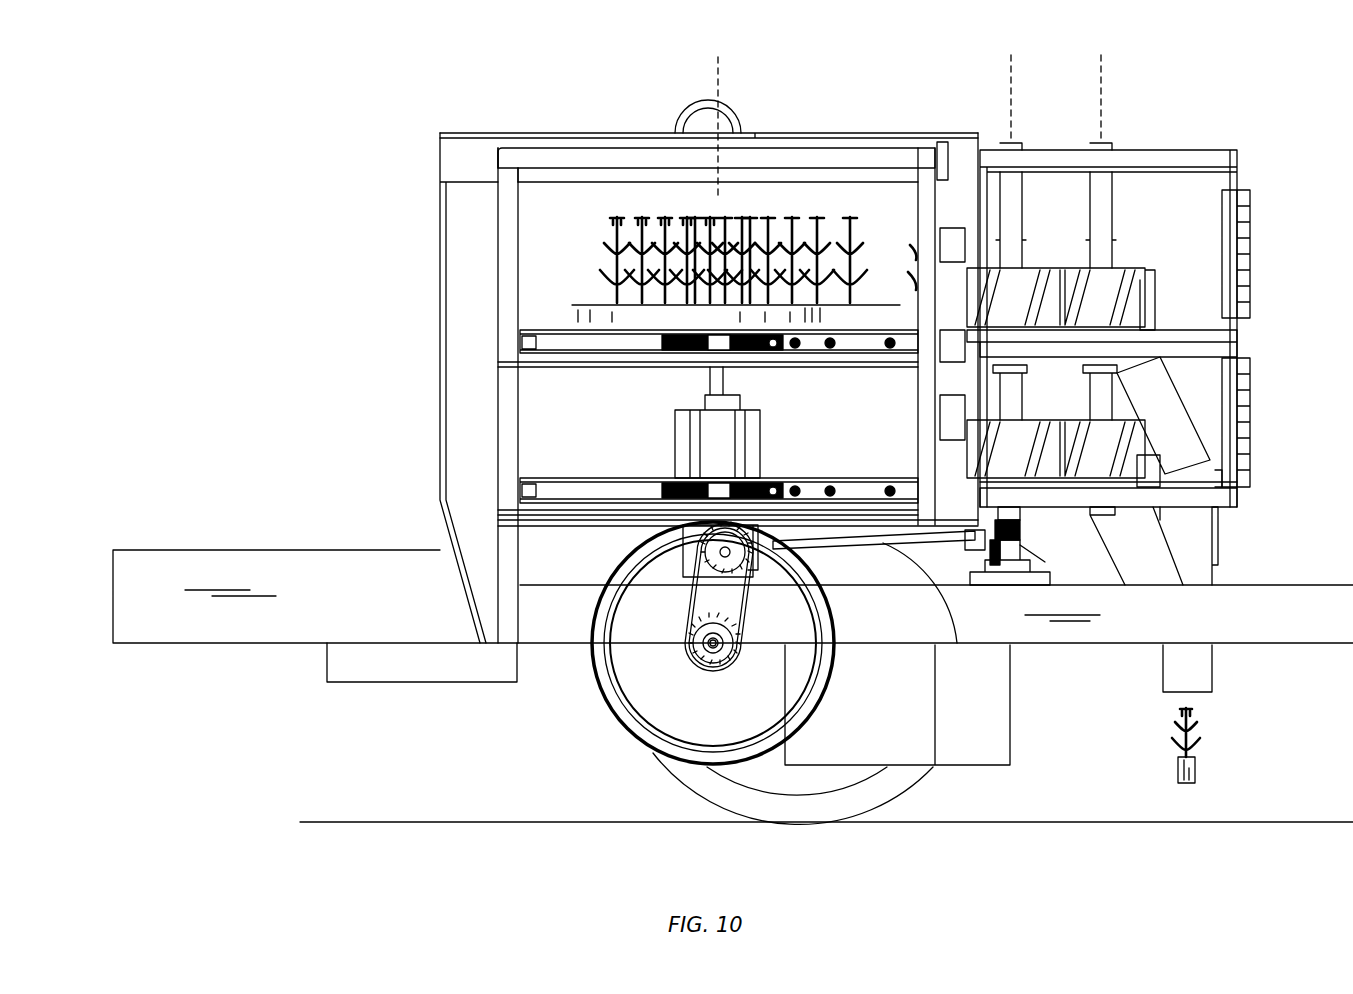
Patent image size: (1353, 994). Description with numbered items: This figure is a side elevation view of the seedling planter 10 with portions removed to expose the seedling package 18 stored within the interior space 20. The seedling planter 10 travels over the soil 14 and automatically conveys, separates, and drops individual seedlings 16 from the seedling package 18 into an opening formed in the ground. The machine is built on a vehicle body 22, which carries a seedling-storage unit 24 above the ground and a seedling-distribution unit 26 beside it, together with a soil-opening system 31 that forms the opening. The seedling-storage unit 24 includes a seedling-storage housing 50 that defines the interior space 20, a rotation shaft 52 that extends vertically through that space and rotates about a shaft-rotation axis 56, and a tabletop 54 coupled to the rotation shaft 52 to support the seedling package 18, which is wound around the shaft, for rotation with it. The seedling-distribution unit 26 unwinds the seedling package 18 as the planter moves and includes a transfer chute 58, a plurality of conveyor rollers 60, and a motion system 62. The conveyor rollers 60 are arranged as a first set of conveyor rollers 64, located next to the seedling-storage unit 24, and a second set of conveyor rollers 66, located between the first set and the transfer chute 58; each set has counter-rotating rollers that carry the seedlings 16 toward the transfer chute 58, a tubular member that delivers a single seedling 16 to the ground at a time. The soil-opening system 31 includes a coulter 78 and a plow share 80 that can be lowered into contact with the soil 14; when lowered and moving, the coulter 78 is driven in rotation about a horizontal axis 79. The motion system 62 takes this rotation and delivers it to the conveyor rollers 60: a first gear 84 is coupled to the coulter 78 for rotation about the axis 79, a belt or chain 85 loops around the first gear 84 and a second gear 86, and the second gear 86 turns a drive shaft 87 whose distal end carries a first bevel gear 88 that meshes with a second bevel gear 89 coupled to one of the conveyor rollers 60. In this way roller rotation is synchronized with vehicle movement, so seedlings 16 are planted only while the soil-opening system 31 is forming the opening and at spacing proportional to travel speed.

The seedling planter 10 is at (275, 130).
The soil 14 is at (1250, 822).
The seedling 16 is at (1215, 740).
The seedling package 18 is at (487, 213).
The interior space 20 is at (487, 283).
The vehicle body 22 is at (392, 700).
The seedling-storage unit 24 is at (512, 130).
The seedling-distribution unit 26 is at (1210, 130).
The soil-opening system 31 is at (570, 672).
The seedling-storage housing 50 is at (580, 146).
The rotation shaft 52 is at (710, 375).
The tabletop 54 is at (555, 325).
The shaft-rotation axis 56 is at (718, 80).
The transfer chute 58 is at (1200, 388).
The conveyor rollers 60 is at (1165, 250).
The motion system 62 is at (880, 755).
The first set of conveyor rollers 64 is at (1027, 260).
The second set of conveyor rollers 66 is at (1120, 255).
The coulter 78 is at (605, 735).
The horizontal axis 79 is at (710, 650).
The plow share 80 is at (975, 775).
The first gear 84 is at (705, 650).
The belt or chain 85 is at (695, 605).
The second gear 86 is at (690, 545).
The drive shaft 87 is at (870, 545).
The first bevel gear 88 is at (1022, 548).
The second bevel gear 89 is at (1040, 537).